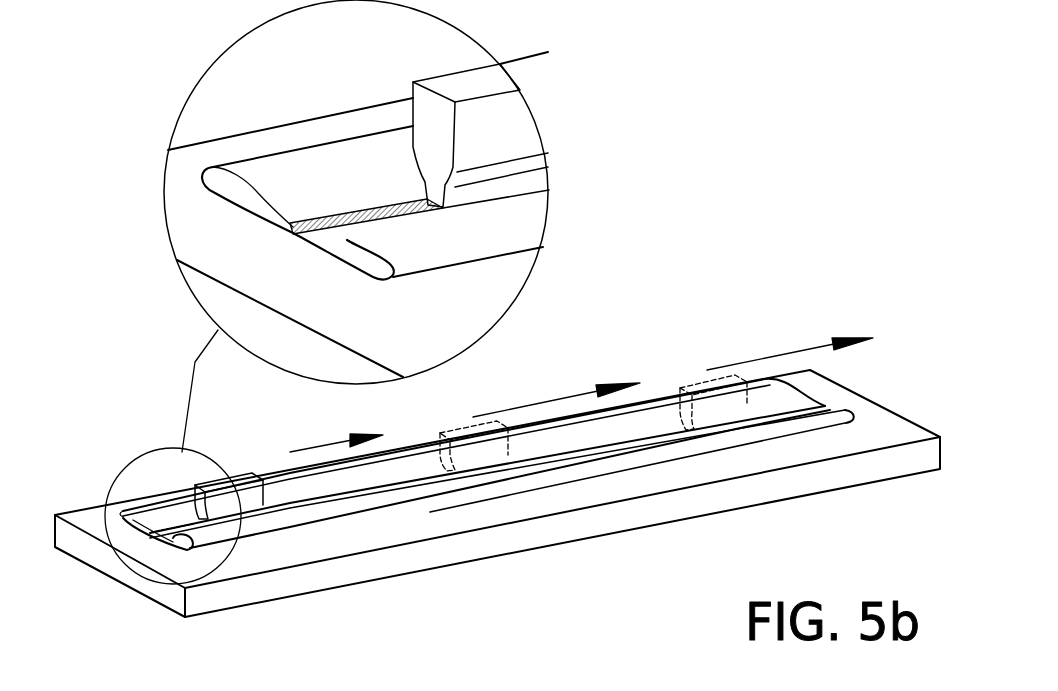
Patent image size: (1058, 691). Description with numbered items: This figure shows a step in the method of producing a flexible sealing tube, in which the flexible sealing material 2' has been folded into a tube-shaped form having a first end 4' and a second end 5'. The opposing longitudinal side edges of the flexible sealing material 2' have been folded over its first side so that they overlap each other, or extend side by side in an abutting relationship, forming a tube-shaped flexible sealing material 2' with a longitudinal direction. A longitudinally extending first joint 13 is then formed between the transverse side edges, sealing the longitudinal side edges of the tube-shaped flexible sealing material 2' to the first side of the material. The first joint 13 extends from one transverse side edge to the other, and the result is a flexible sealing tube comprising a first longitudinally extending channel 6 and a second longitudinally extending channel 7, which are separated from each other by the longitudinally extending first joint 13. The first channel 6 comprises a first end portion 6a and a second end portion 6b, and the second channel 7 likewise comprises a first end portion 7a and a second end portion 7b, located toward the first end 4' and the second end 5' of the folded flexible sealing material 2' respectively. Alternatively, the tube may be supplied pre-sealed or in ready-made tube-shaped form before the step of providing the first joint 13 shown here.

The flexible sealing material 2' is at (258, 395).
The first end 4' is at (151, 590).
The second end 5' is at (860, 377).
The first longitudinally extending channel 6 is at (108, 538).
The first end portion of the first channel 6a is at (263, 442).
The second end portion of the first channel 6b is at (723, 348).
The second longitudinally extending channel 7 is at (173, 543).
The first end portion of the second channel 7a is at (290, 610).
The second end portion of the second channel 7b is at (750, 517).
The first joint 13 is at (137, 540).